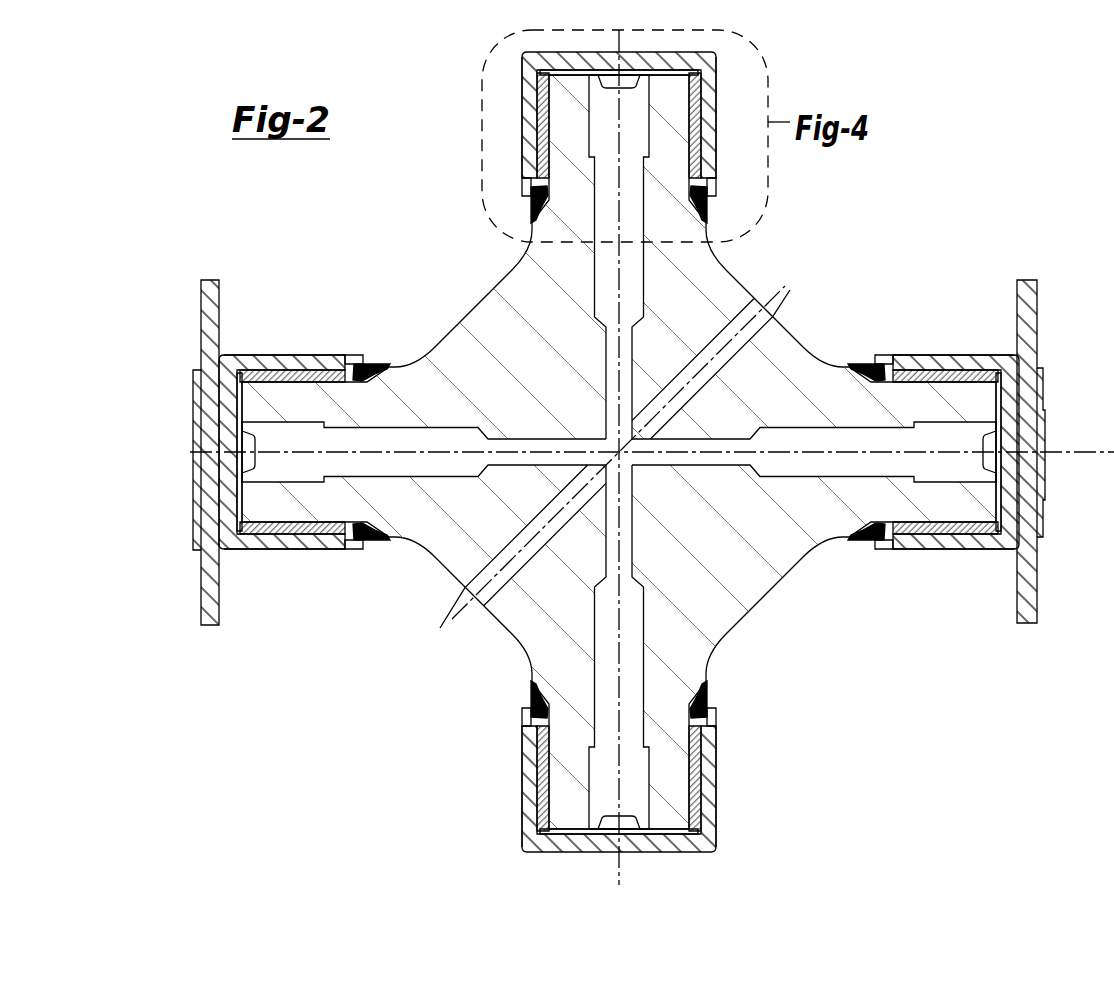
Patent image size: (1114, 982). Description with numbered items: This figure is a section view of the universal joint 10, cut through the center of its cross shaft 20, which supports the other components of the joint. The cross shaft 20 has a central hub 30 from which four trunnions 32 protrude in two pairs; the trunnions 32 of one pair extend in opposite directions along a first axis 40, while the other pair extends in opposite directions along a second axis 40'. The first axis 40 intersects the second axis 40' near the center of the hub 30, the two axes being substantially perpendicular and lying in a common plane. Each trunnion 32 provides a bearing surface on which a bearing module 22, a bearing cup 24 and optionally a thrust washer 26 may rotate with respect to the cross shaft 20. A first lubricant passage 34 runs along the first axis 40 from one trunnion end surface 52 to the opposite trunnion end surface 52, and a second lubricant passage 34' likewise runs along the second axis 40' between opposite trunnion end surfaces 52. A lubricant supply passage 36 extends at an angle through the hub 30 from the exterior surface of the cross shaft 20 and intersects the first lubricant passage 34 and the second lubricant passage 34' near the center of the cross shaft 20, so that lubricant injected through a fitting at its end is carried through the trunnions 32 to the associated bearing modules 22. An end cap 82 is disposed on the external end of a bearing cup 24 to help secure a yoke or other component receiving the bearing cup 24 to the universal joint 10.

The universal joint 10 is at (905, 221).
The cross shaft 20 is at (461, 318).
The bearing module 22 is at (705, 100).
The bearing cup 24 is at (522, 137).
The thrust washer 26 is at (540, 73).
The hub 30 is at (775, 585).
The trunnion 32 is at (693, 147).
The first lubricant passage 34 is at (619, 452).
The second lubricant passage 34' is at (619, 452).
The lubricant supply passage 36 is at (762, 305).
The first axis 40 is at (652, 425).
The second axis 40' is at (635, 457).
The trunnion end surface 52 is at (670, 73).
The end cap 82 is at (200, 290).